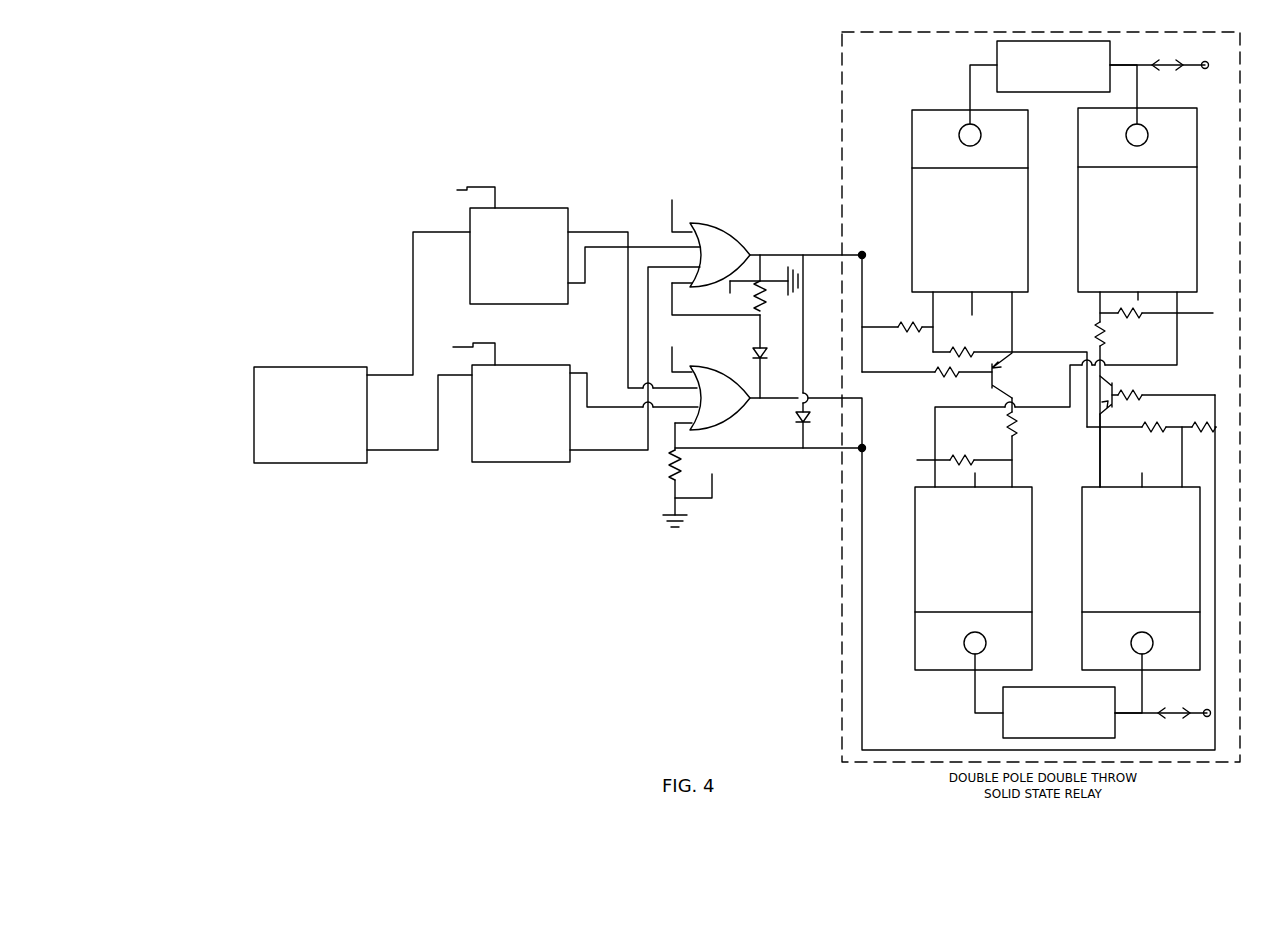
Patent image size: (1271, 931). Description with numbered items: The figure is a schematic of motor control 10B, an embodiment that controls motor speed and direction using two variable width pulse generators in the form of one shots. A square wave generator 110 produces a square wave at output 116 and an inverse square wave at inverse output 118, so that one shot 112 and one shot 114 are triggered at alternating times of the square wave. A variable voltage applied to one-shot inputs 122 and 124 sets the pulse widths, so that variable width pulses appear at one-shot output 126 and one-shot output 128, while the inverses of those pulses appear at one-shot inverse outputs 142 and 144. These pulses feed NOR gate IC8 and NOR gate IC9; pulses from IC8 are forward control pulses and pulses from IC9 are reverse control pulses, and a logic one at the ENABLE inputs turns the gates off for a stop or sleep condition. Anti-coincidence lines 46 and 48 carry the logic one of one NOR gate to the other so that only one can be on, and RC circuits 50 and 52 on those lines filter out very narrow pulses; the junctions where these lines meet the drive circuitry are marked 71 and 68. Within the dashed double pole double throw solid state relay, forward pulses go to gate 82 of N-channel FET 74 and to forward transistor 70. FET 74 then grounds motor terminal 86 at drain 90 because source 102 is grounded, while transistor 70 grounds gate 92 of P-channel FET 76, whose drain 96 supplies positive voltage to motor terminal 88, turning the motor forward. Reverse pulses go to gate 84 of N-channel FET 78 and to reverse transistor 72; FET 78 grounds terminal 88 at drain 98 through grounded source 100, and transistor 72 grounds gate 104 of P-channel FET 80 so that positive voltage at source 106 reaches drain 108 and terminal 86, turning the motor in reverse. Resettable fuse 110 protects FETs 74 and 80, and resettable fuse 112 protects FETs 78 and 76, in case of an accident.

The motor control 10B is at (354, 104).
The square wave generator 110 is at (296, 367).
The one shot 112 is at (470, 268).
The one shot 114 is at (500, 462).
The output 116 is at (413, 350).
The inverse output 118 is at (418, 452).
The one-shot input 122 is at (457, 190).
The one-shot input 124 is at (453, 347).
The one-shot output 126 is at (590, 232).
The one-shot output 128 is at (590, 372).
The one-shot inverse output 142 is at (579, 285).
The one-shot inverse output 144 is at (590, 455).
The NOR gate IC8 is at (735, 232).
The NOR gate IC9 is at (732, 422).
The RC circuit 50 is at (769, 259).
The anti-coincidence line 48 is at (765, 333).
The RC circuit 52 is at (728, 515).
The anti-coincidence line 46 is at (806, 367).
The junction 68 is at (862, 447).
The junction 71 is at (862, 252).
The forward transistor 70 is at (990, 375).
The reverse transistor 72 is at (1113, 384).
The N-channel FET 74 is at (932, 217).
The P-channel FET 76 is at (932, 547).
The N-channel FET 78 is at (1095, 547).
The P-channel FET 80 is at (1088, 217).
The gate 82 is at (932, 308).
The gate 84 is at (1177, 472).
The motor terminal 86 is at (1203, 62).
The motor terminal 88 is at (1203, 716).
The drain 90 is at (923, 117).
The gate 92 is at (1010, 473).
The drain 96 is at (935, 653).
The drain 98 is at (1093, 643).
The source 100 is at (1100, 465).
The source 102 is at (1012, 325).
The gate 104 is at (1100, 305).
The source 106 is at (1177, 303).
The drain 108 is at (1088, 142).